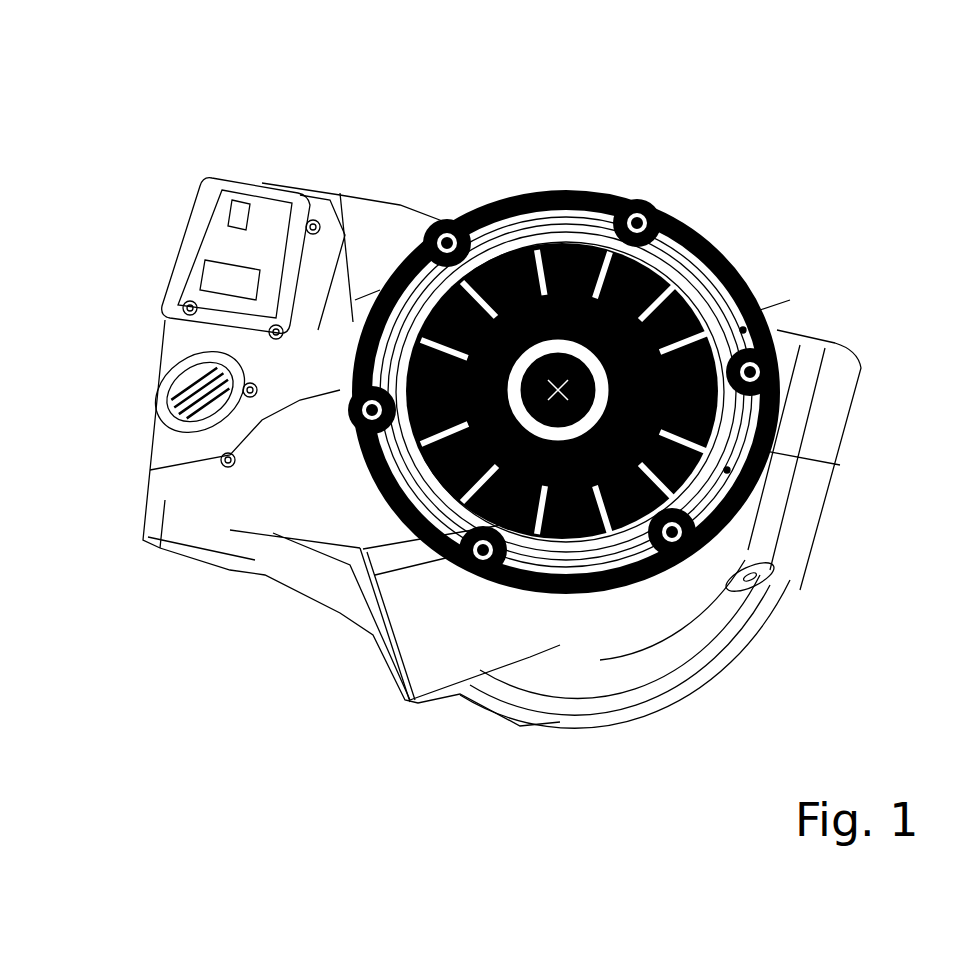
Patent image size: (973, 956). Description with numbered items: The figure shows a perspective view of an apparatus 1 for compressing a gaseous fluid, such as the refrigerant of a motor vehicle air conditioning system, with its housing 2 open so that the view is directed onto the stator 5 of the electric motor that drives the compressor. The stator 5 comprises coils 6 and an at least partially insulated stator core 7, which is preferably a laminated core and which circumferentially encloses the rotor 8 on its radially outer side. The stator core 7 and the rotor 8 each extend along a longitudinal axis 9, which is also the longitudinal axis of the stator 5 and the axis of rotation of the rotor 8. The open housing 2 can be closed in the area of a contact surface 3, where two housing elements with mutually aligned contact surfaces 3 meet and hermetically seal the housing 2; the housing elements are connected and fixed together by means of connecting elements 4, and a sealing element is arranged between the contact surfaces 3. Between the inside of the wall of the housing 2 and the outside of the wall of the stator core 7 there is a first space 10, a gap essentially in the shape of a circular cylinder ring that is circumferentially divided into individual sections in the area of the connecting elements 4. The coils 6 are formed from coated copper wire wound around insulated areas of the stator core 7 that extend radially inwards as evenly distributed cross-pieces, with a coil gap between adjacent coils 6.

The apparatus 1 is at (853, 158).
The housing 2 is at (815, 348).
The contact surface 3 is at (748, 262).
The connecting elements 4 is at (662, 213).
The stator 5 is at (733, 403).
The coils 6 is at (578, 280).
The stator core 7 is at (727, 470).
The rotor 8 is at (622, 525).
The longitudinal axis 9 is at (561, 430).
The first space 10 is at (382, 285).